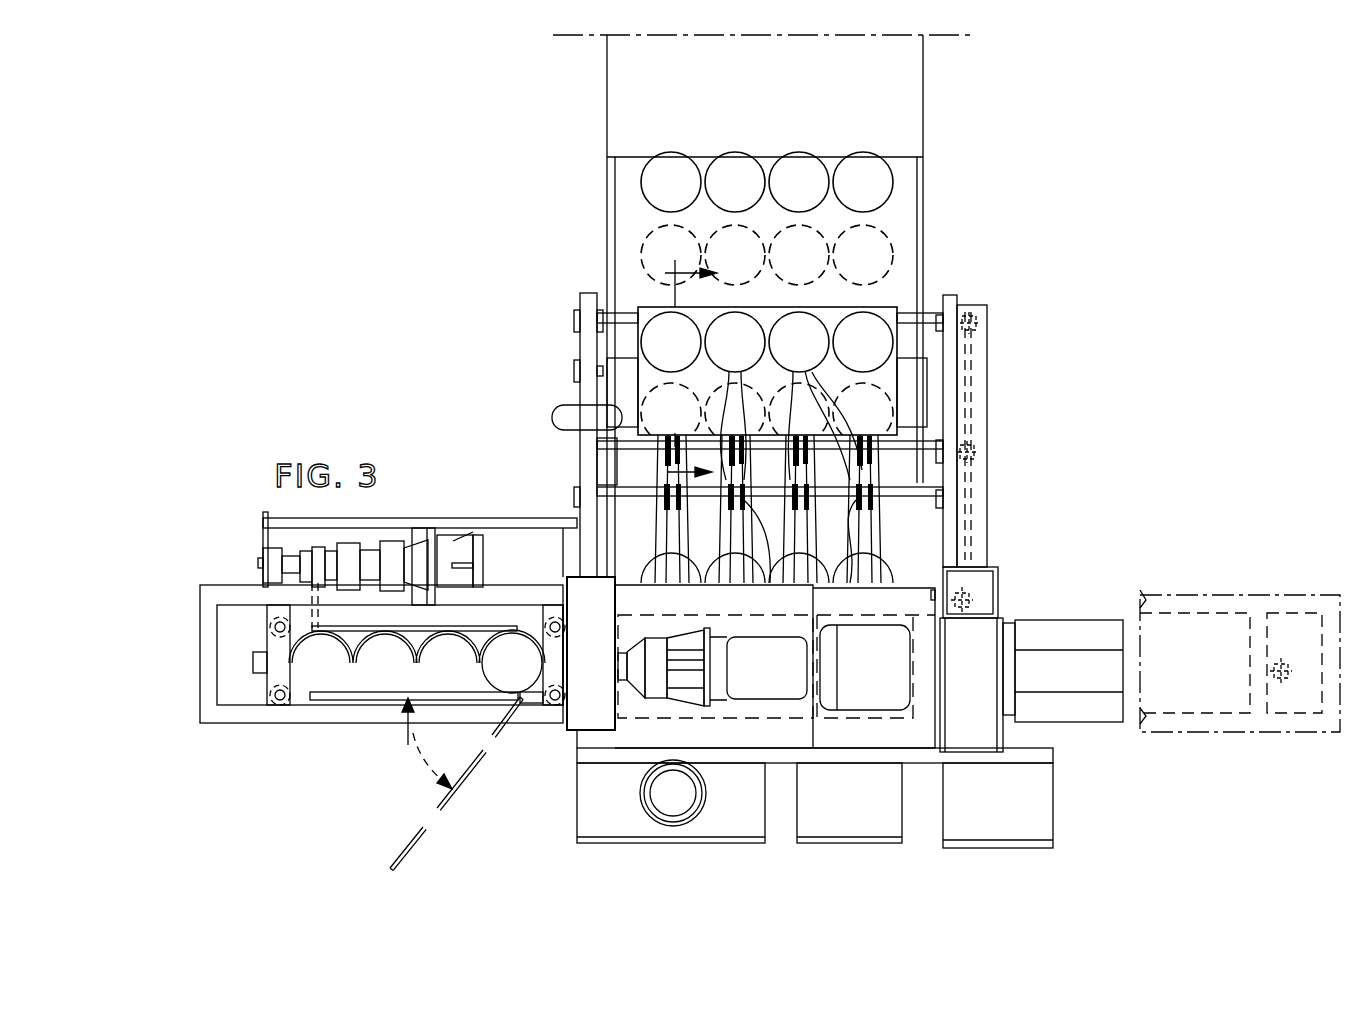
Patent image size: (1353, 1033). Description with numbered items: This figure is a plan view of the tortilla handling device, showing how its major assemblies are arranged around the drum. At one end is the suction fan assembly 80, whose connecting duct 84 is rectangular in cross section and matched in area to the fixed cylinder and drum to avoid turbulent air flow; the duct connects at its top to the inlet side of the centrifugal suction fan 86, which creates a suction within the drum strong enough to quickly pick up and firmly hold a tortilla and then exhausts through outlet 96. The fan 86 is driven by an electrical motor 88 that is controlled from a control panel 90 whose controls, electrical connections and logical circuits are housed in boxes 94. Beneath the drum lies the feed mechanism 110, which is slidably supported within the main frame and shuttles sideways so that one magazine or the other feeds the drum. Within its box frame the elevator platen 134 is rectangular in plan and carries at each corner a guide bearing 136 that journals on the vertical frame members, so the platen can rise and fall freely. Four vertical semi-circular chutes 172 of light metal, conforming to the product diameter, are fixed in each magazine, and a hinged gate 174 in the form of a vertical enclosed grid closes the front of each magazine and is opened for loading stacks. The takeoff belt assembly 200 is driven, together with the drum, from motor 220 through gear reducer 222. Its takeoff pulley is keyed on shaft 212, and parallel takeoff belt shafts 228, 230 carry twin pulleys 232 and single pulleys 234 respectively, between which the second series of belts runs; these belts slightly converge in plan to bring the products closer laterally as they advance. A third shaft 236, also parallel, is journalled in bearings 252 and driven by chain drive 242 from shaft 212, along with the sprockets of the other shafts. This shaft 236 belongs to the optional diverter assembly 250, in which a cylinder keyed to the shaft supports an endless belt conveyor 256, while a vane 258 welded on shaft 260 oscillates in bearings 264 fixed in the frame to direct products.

The suction fan assembly 80 is at (1040, 608).
The connecting duct 84 is at (1105, 713).
The suction fan 86 is at (995, 598).
The electrical motor 88 is at (855, 678).
The control panel 90 is at (600, 764).
The boxes 94 is at (760, 843).
The outlet 96 is at (967, 570).
The feed mechanism 110 is at (319, 718).
The elevator platen 134 is at (377, 678).
The guide bearing 136 is at (265, 623).
The semi-circular chutes 172 is at (433, 643).
The gate 174 is at (440, 698).
The takeoff belt assembly 200 is at (655, 545).
The shaft 212 is at (930, 603).
The motor 220 is at (740, 680).
The gear reducer 222 is at (658, 640).
The takeoff belt shaft 228 is at (613, 503).
The takeoff belt shaft 230 is at (620, 445).
The twin pulleys 232 is at (850, 512).
The single pulleys 234 is at (767, 342).
The third shaft 236 is at (622, 312).
The chain drive 242 is at (990, 416).
The diverter assembly 250 is at (832, 310).
The bearings 252 is at (585, 330).
The endless belt conveyor 256 is at (847, 354).
The vane 258 is at (918, 410).
The shaft 260 is at (945, 360).
The bearings 264 is at (582, 383).